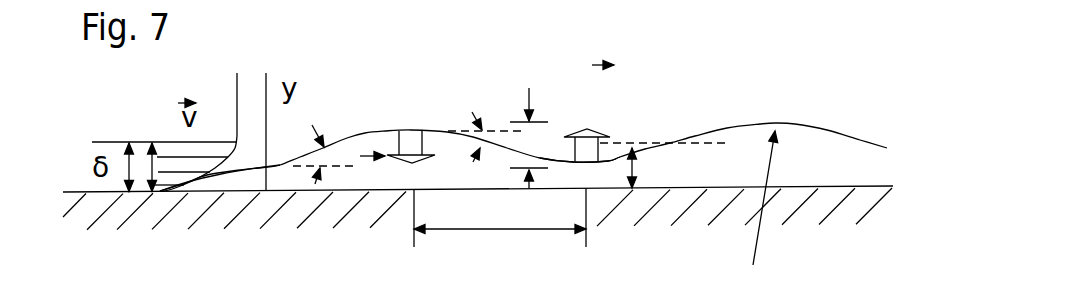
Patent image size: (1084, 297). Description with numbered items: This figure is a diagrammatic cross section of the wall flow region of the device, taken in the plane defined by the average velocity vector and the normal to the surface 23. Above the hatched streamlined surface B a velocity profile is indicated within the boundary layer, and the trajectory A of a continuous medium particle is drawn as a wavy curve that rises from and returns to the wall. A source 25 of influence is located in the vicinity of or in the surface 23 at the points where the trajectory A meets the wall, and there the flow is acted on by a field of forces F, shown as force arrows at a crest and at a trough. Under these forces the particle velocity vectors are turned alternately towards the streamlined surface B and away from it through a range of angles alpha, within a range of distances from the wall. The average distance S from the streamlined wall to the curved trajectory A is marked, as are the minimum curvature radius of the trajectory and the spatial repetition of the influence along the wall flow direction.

The surface 23 is at (731, 186).
The source of influence 25 is at (419, 188).
The trajectory of the continuous medium particle A is at (357, 136).
The streamlined surface B is at (477, 221).
The field of forces F is at (391, 157).
The average distance from the streamlined wall to the curved trajectory S is at (663, 167).